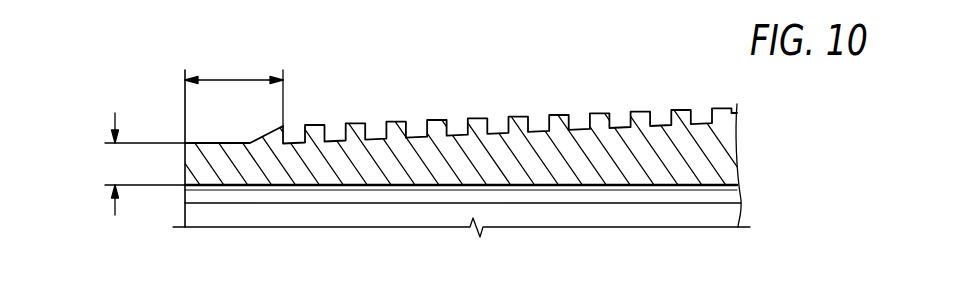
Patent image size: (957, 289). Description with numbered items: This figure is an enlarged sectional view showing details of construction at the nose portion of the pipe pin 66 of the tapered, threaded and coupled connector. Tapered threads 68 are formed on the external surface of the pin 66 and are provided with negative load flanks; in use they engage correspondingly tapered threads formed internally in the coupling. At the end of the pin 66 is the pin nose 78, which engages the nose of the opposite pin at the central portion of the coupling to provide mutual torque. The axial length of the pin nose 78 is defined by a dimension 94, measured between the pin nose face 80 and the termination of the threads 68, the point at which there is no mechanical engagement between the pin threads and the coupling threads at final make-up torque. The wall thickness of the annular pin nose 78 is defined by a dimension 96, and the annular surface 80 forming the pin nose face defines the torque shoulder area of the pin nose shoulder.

The pipe pin 66 is at (712, 153).
The tapered threads 68 is at (553, 113).
The pin nose 78 is at (238, 167).
The pin nose face 80 is at (185, 164).
The pin nose length dimension 94 is at (237, 80).
The wall thickness dimension 96 is at (112, 162).